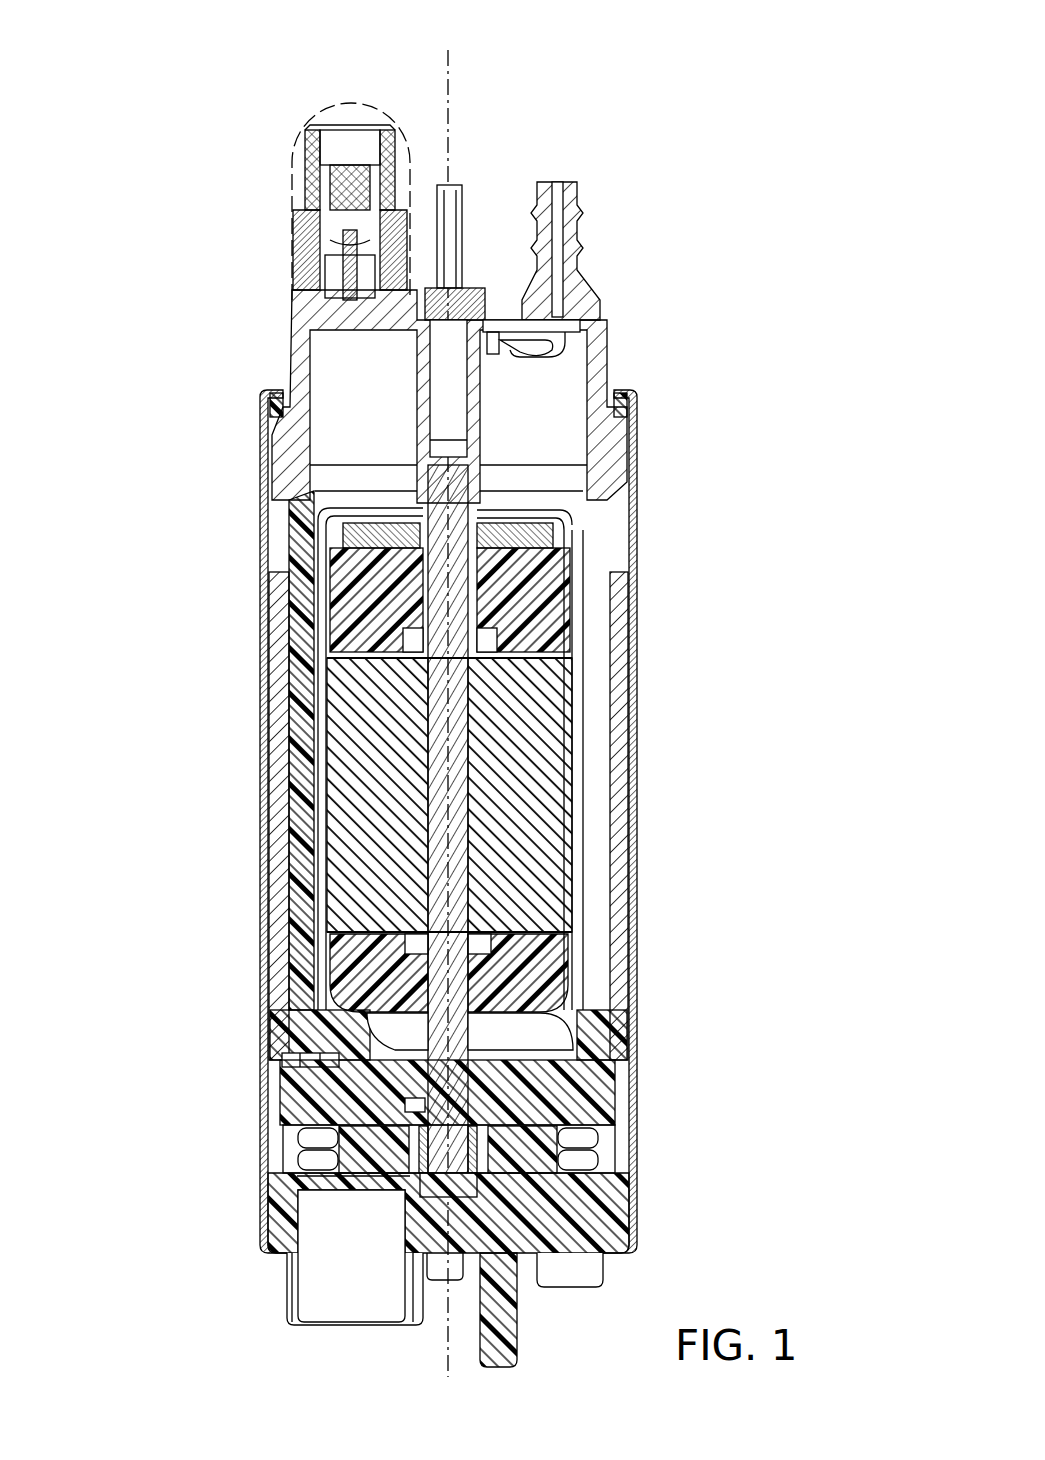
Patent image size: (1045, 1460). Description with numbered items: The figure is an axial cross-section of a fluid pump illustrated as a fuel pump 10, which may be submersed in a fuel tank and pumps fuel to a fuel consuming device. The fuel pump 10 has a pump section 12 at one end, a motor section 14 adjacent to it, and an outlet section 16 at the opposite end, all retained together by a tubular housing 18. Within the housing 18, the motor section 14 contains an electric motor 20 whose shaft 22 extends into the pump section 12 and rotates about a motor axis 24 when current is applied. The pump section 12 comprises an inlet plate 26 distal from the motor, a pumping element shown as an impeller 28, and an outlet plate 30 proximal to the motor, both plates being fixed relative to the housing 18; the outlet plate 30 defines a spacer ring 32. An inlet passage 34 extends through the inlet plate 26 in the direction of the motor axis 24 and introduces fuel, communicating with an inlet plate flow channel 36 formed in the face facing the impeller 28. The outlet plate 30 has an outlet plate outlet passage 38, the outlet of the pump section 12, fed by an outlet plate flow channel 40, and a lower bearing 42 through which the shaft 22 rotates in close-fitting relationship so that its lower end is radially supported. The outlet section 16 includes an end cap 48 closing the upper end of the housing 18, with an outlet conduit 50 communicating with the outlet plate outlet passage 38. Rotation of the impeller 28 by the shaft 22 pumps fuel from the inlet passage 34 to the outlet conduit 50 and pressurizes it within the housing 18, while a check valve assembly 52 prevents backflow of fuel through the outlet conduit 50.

The fuel pump 10 is at (690, 64).
The pump section 12 is at (177, 1063).
The motor section 14 is at (177, 458).
The outlet section 16 is at (177, 45).
The housing 18 is at (635, 578).
The electric motor 20 is at (640, 797).
The shaft 22 is at (455, 815).
The motor axis 24 is at (450, 58).
The inlet plate 26 is at (618, 1222).
The impeller 28 is at (605, 1165).
The outlet plate 30 is at (618, 1072).
The spacer ring 32 is at (277, 1160).
The inlet passage 34 is at (330, 1307).
The inlet plate flow channel 36 is at (579, 1177).
The outlet plate outlet passage 38 is at (565, 1100).
The outlet plate flow channel 40 is at (580, 1145).
The lower bearing 42 is at (425, 1110).
The end cap 48 is at (600, 318).
The outlet conduit 50 is at (310, 163).
The check valve assembly 52 is at (300, 203).